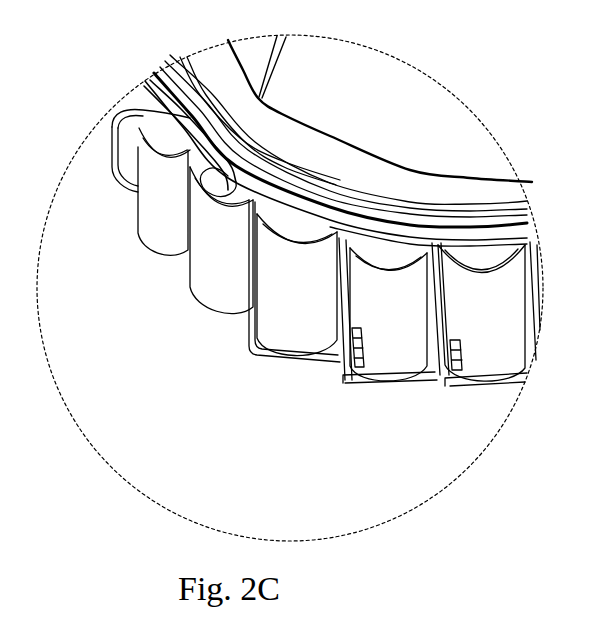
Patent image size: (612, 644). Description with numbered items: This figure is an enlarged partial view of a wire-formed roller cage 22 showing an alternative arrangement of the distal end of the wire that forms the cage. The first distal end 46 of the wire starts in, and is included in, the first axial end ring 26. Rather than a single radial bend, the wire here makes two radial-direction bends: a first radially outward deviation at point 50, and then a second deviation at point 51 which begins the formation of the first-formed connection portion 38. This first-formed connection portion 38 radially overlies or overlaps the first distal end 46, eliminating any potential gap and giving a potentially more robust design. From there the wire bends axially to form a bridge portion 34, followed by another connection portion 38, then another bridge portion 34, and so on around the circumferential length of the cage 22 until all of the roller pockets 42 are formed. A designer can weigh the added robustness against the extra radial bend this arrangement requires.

The cage 22 is at (340, 453).
The first axial end ring 26 is at (312, 220).
The bridge portion 34 is at (260, 300).
The connection portion 38 is at (243, 205).
The roller pocket 42 is at (415, 400).
The first distal end 46 is at (235, 198).
The deviation point 50 is at (242, 164).
The second deviation point 51 is at (227, 187).